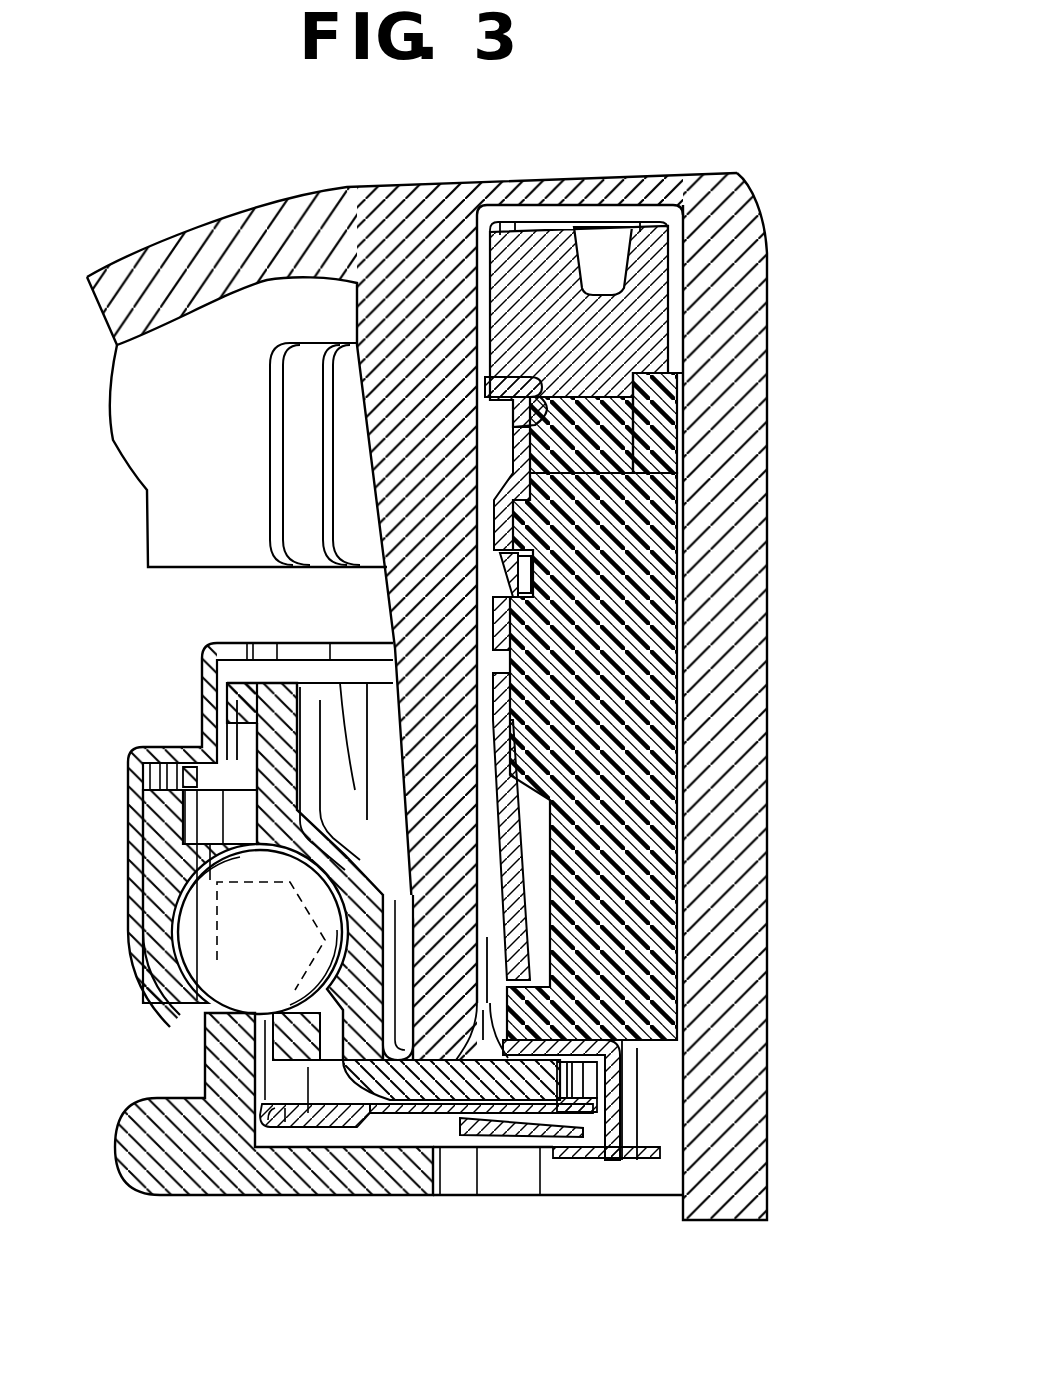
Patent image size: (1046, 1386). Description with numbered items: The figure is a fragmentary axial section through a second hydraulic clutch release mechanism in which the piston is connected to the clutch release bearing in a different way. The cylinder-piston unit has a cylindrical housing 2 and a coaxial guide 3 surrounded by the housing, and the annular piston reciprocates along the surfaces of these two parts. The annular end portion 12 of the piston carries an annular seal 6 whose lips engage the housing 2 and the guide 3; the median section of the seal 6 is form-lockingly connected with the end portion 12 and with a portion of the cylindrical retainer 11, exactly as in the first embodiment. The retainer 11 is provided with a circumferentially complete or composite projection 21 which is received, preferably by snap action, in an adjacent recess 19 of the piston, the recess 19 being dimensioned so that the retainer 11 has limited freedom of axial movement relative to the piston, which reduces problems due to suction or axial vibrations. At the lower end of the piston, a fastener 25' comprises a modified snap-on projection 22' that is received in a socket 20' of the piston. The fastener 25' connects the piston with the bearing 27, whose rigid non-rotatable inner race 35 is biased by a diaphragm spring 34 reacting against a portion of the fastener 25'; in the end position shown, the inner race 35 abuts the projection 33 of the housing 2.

The cylindrical housing 2 is at (410, 585).
The guide 3 is at (750, 1142).
The annular seal 6 is at (645, 290).
The retainer 11 is at (518, 503).
The end portion 12 is at (643, 405).
The recess 19 is at (533, 585).
The socket 20' is at (697, 718).
The projection 21 is at (525, 567).
The snap-on projection 22' is at (687, 800).
The fastener 25' is at (695, 1100).
The bearing 27 is at (200, 965).
The projection 33 is at (443, 1047).
The diaphragm spring 34 is at (508, 1128).
The inner race 35 is at (245, 730).